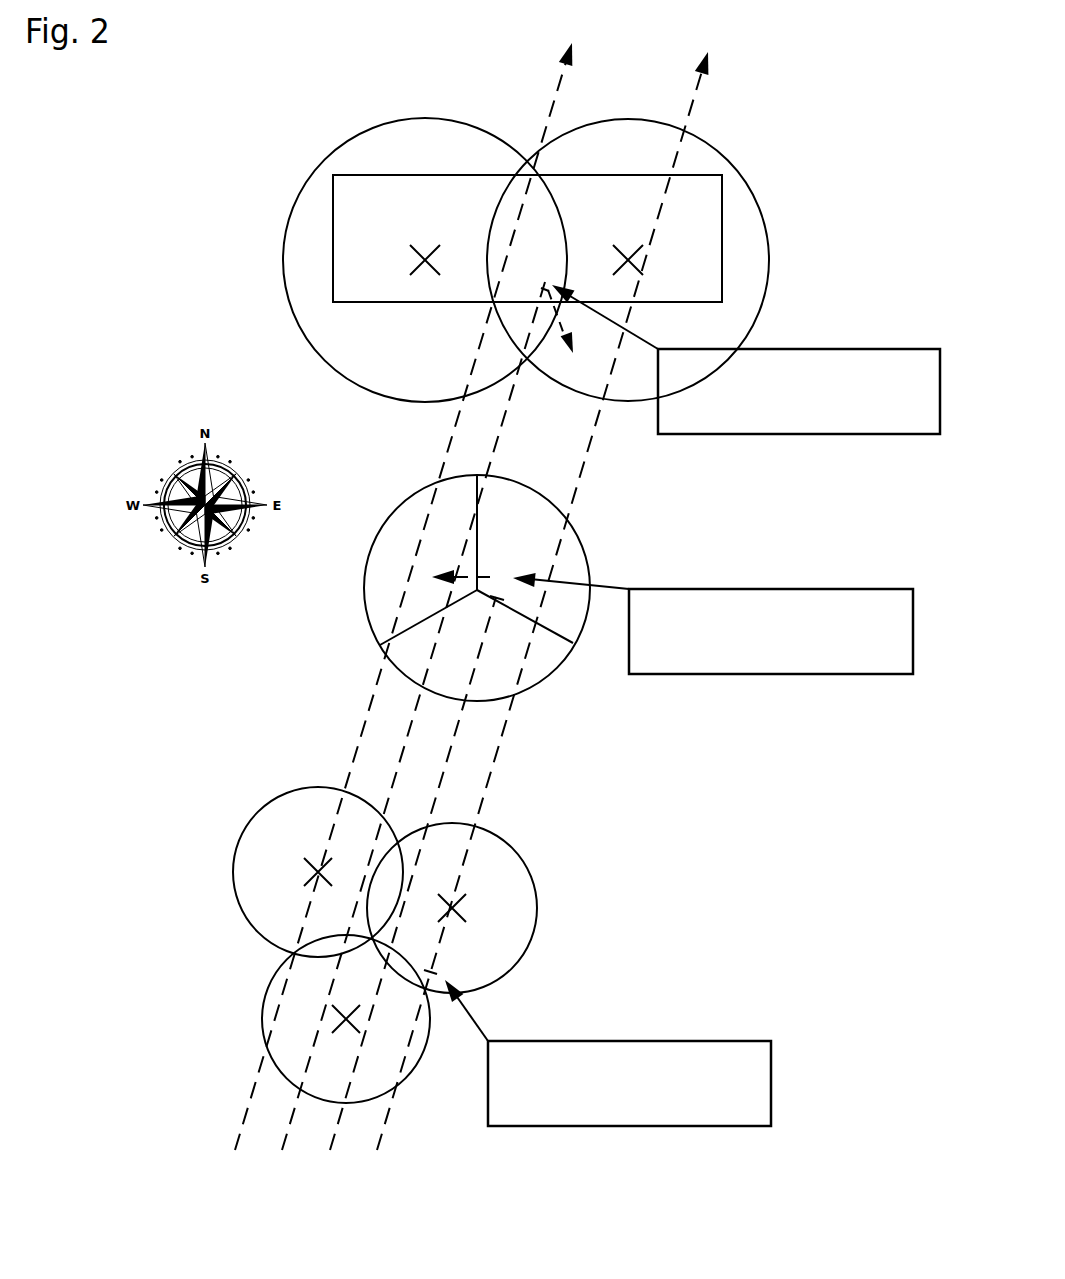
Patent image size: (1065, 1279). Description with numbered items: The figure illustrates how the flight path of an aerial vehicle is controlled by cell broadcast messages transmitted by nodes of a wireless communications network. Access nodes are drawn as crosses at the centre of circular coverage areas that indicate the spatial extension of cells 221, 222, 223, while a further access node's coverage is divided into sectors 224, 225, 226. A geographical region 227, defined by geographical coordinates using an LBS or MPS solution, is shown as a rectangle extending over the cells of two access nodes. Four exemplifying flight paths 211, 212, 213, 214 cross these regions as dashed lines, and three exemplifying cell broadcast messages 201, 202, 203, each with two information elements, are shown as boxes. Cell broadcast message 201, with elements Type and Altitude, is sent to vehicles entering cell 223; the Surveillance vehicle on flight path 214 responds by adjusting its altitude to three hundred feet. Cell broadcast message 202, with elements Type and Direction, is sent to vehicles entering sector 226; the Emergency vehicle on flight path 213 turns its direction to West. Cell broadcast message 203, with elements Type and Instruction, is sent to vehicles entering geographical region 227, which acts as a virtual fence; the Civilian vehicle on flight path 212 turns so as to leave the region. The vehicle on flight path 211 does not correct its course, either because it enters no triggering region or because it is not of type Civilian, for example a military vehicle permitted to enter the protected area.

The cell broadcast message 201 is at (658, 1040).
The cell broadcast message 202 is at (798, 590).
The cell broadcast message 203 is at (827, 350).
The flight path 211 is at (238, 1150).
The flight path 212 is at (285, 1150).
The flight path 213 is at (333, 1150).
The flight path 214 is at (380, 1150).
The cell 221 is at (233, 872).
The cell 222 is at (262, 1012).
The cell 223 is at (527, 955).
The sector 224 is at (365, 582).
The sector 225 is at (560, 663).
The sector 226 is at (588, 560).
The geographical region 227 is at (403, 302).